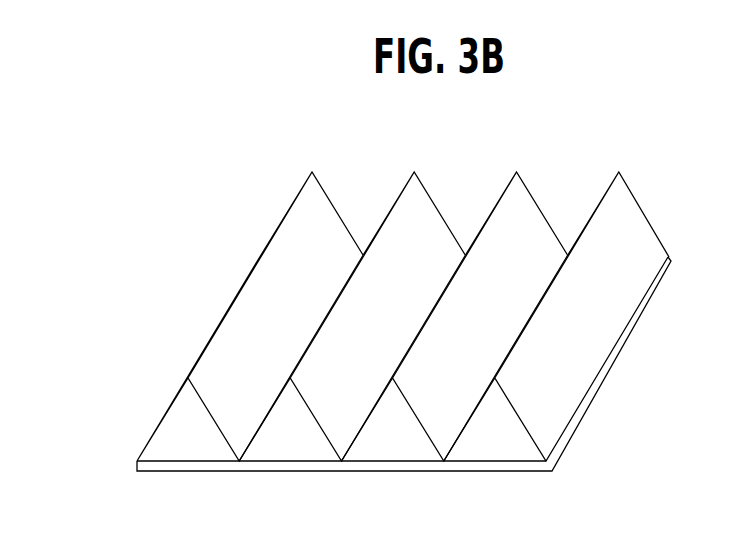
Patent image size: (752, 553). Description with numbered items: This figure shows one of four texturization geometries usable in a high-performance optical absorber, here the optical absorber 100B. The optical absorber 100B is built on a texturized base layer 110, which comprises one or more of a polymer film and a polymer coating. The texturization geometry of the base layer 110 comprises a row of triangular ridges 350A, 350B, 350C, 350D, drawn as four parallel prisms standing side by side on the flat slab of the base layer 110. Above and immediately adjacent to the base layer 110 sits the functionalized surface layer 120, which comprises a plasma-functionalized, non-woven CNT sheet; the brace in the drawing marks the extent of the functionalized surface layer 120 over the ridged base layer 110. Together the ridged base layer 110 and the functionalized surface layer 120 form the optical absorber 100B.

The optical absorber 100B is at (703, 525).
The base layer 110 is at (470, 476).
The functionalized surface layer 120 is at (102, 462).
The triangular ridge 350A is at (277, 346).
The triangular ridge 350B is at (387, 346).
The triangular ridge 350C is at (497, 346).
The triangular ridge 350D is at (587, 346).